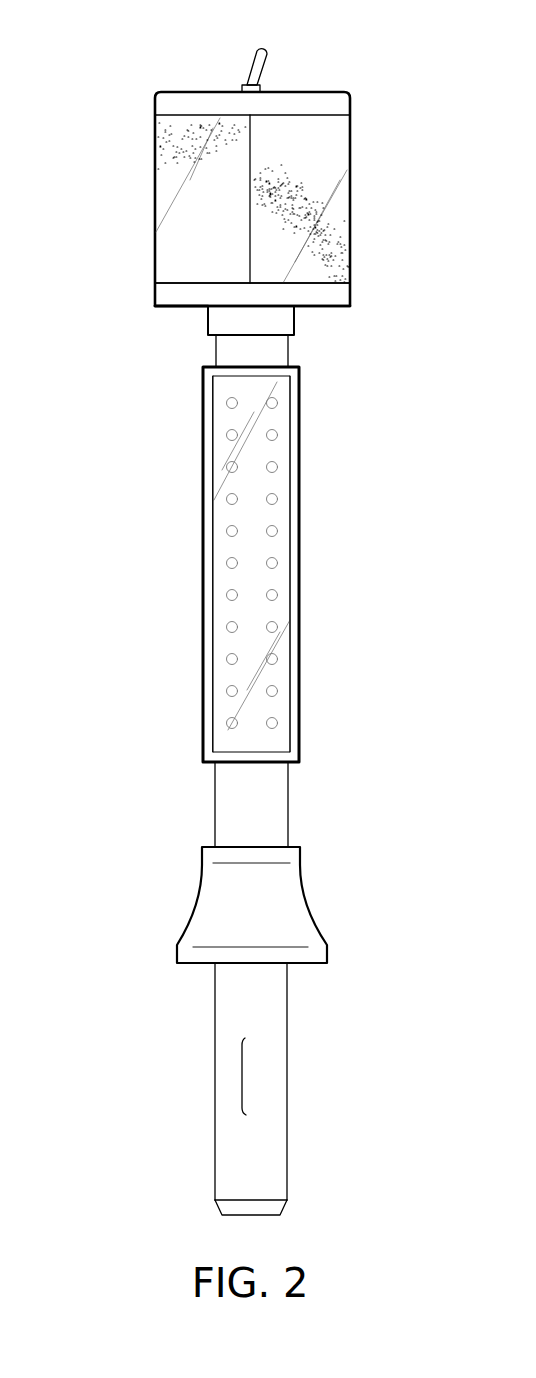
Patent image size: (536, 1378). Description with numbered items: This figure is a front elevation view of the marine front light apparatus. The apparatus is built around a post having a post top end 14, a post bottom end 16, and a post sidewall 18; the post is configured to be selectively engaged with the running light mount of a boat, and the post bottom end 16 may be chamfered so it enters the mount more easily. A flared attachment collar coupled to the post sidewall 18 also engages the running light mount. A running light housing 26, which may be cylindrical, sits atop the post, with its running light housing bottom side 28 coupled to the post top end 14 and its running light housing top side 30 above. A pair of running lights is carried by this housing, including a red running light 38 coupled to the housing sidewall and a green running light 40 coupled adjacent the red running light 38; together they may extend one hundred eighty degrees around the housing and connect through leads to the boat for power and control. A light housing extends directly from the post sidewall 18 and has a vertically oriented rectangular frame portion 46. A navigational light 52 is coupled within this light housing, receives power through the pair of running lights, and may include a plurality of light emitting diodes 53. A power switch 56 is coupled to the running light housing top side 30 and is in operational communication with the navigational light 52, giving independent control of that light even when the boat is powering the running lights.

The post top end 14 is at (265, 334).
The post bottom end 16 is at (252, 1215).
The post sidewall 18 is at (240, 1075).
The running light housing 26 is at (155, 296).
The running light housing bottom side 28 is at (176, 308).
The running light housing top side 30 is at (296, 92).
The red running light 38 is at (330, 183).
The green running light 40 is at (177, 163).
The vertically oriented rectangular frame portion 46 is at (298, 677).
The navigational light 52 is at (252, 590).
The light emitting diodes 53 is at (232, 497).
The power switch 56 is at (256, 66).